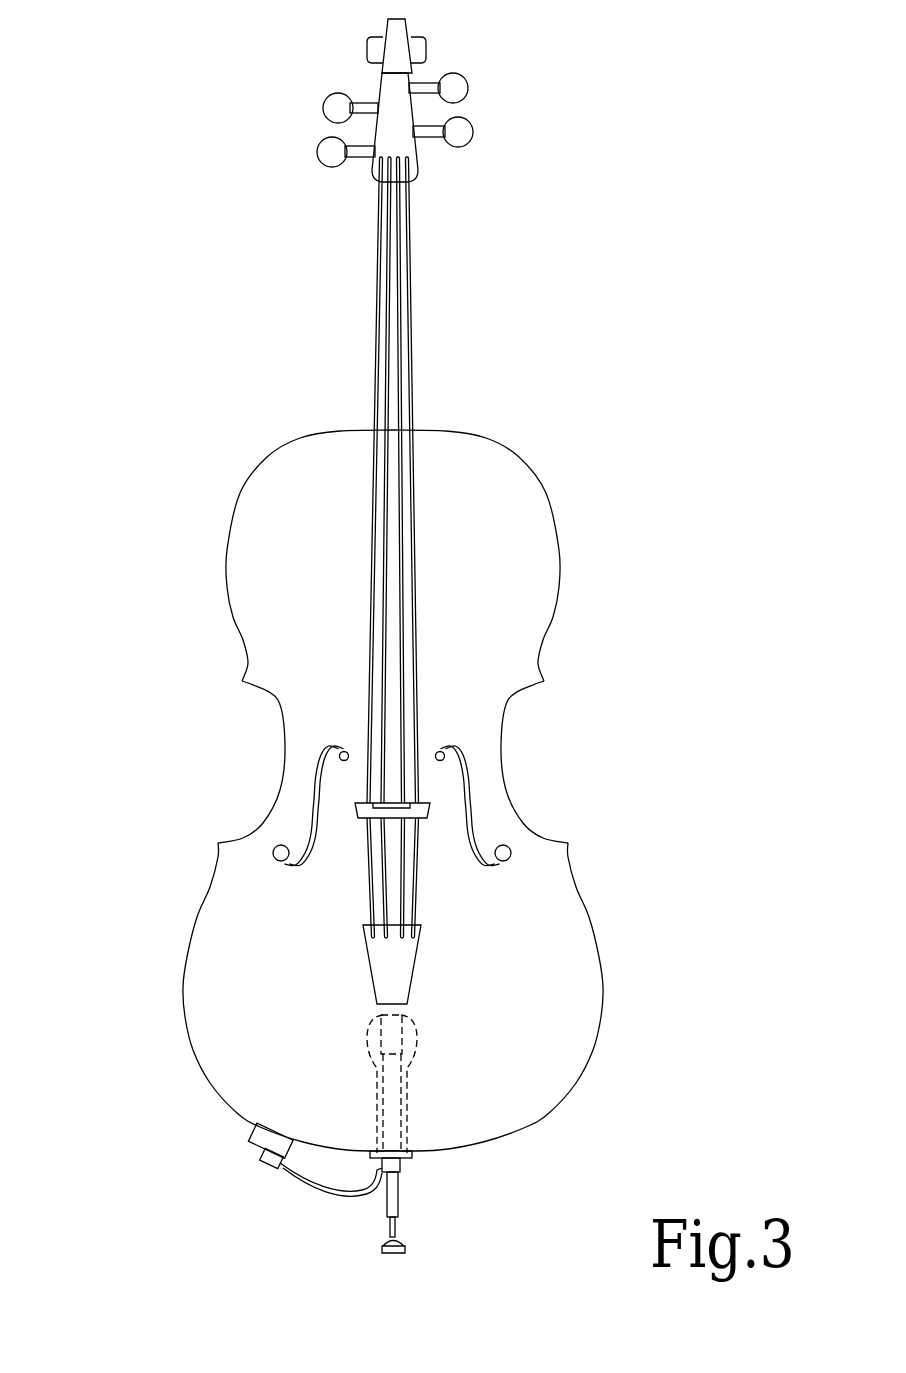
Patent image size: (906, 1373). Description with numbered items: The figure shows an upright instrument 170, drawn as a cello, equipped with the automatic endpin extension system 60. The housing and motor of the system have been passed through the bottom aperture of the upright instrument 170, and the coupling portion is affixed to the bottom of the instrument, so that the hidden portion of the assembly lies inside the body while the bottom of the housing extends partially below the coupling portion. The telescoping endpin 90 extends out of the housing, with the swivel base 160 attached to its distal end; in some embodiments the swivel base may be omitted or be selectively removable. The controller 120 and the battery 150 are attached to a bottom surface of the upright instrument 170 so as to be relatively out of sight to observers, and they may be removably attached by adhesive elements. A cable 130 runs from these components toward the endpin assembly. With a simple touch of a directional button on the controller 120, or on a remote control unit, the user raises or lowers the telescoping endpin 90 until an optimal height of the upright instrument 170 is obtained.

The upright instrument 170 is at (520, 460).
The automatic endpin extension system 60 is at (450, 1162).
The telescoping endpin 90 is at (398, 1200).
The swivel base 160 is at (387, 1237).
The battery 150 is at (250, 1131).
The controller 120 is at (268, 1170).
The cable 130 is at (325, 1177).